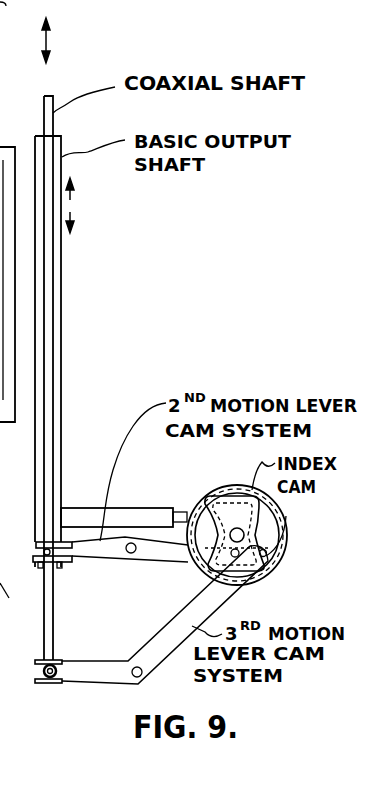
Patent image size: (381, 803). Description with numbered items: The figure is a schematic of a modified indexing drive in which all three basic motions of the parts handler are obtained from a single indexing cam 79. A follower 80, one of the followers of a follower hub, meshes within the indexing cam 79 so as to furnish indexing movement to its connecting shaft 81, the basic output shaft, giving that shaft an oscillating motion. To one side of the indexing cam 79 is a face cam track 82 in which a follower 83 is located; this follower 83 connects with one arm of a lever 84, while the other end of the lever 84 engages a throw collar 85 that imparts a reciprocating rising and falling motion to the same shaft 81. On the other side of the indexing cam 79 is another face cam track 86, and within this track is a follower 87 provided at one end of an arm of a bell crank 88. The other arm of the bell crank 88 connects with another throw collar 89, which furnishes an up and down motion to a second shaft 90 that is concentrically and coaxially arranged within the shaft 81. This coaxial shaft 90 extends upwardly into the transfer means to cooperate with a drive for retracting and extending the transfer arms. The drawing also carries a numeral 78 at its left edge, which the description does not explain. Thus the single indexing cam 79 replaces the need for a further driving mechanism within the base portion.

The second shaft 90 is at (50, 96).
The connecting shaft 81 is at (62, 339).
The throw collar 85 is at (37, 543).
The first motion lever 78 is at (11, 603).
The throw collar 89 is at (28, 675).
The lever 84 is at (191, 562).
The follower 80 is at (203, 500).
The face cam track 86 is at (233, 492).
The face cam track 82 is at (283, 521).
The indexing cam 79 is at (288, 537).
The follower 87 is at (280, 556).
The follower 83 is at (258, 576).
The bell crank 88 is at (176, 621).